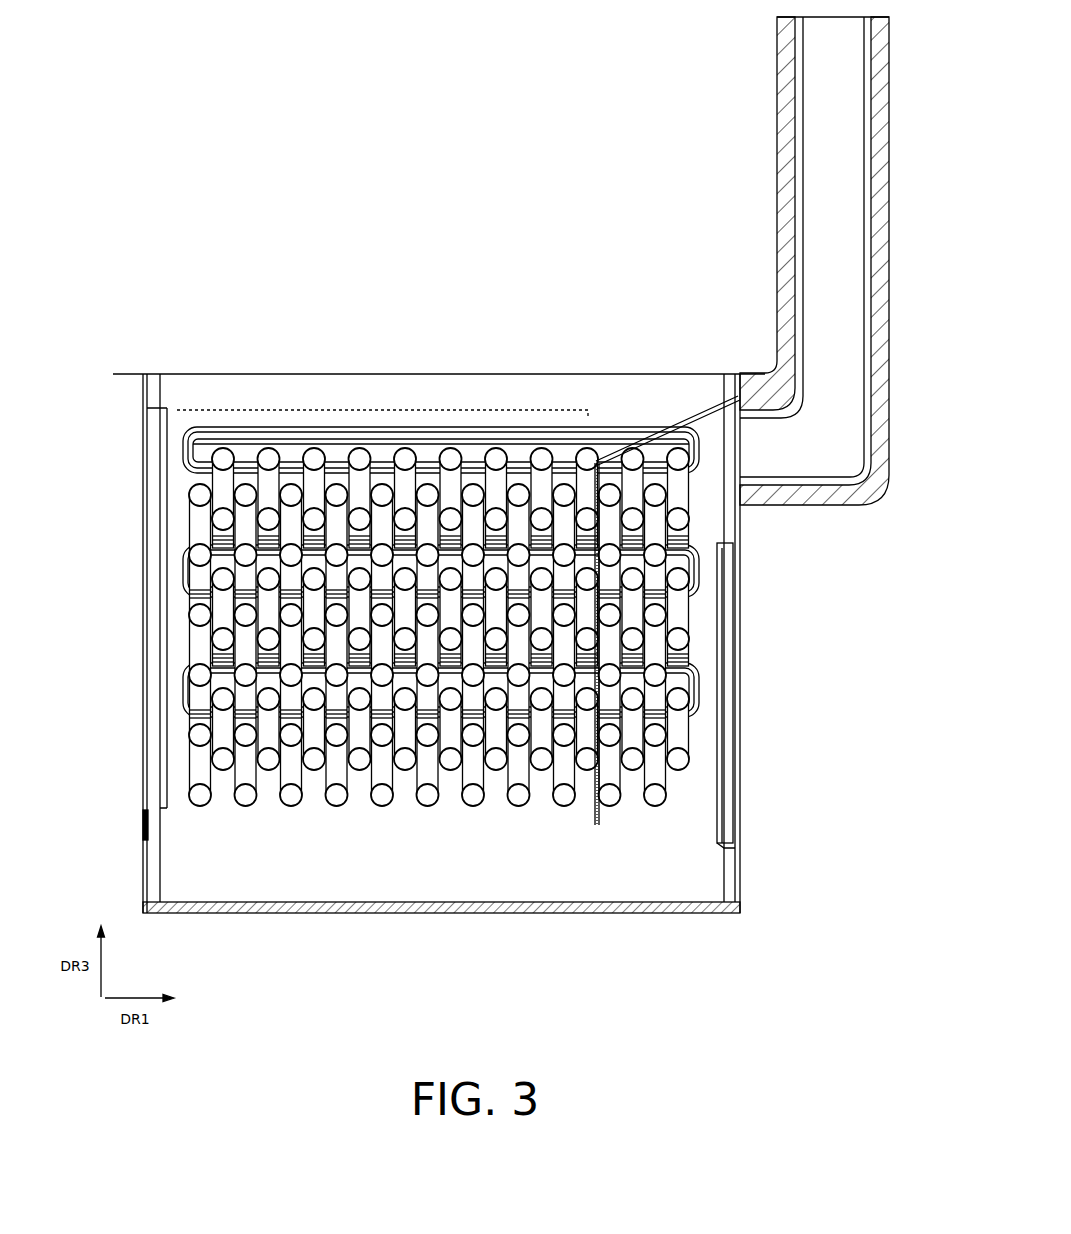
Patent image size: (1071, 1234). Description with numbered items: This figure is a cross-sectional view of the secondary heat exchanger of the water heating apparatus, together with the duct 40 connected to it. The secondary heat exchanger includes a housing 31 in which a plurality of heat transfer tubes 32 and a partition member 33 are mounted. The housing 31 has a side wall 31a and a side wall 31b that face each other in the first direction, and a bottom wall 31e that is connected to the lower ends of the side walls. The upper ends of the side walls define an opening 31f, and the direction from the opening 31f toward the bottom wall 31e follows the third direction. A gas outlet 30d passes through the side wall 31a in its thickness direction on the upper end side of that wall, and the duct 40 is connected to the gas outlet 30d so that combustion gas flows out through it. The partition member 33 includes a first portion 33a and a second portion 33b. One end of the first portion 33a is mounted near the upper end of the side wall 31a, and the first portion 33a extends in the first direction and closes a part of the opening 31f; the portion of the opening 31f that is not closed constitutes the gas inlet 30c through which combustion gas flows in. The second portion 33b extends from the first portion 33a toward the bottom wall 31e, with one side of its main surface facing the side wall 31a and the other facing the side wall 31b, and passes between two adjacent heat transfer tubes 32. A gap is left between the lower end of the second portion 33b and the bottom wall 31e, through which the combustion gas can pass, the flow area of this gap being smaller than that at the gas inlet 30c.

The gas inlet 30c is at (495, 551).
The gas outlet 30d is at (737, 448).
The housing 31 is at (461, 653).
The side wall 31a is at (742, 864).
The side wall 31b is at (143, 870).
The bottom wall 31e is at (516, 914).
The opening 31f is at (175, 410).
The heat transfer tubes 32 is at (680, 580).
The partition member 33 is at (645, 542).
The first portion 33a is at (668, 431).
The second portion 33b is at (596, 493).
The duct 40 is at (778, 152).